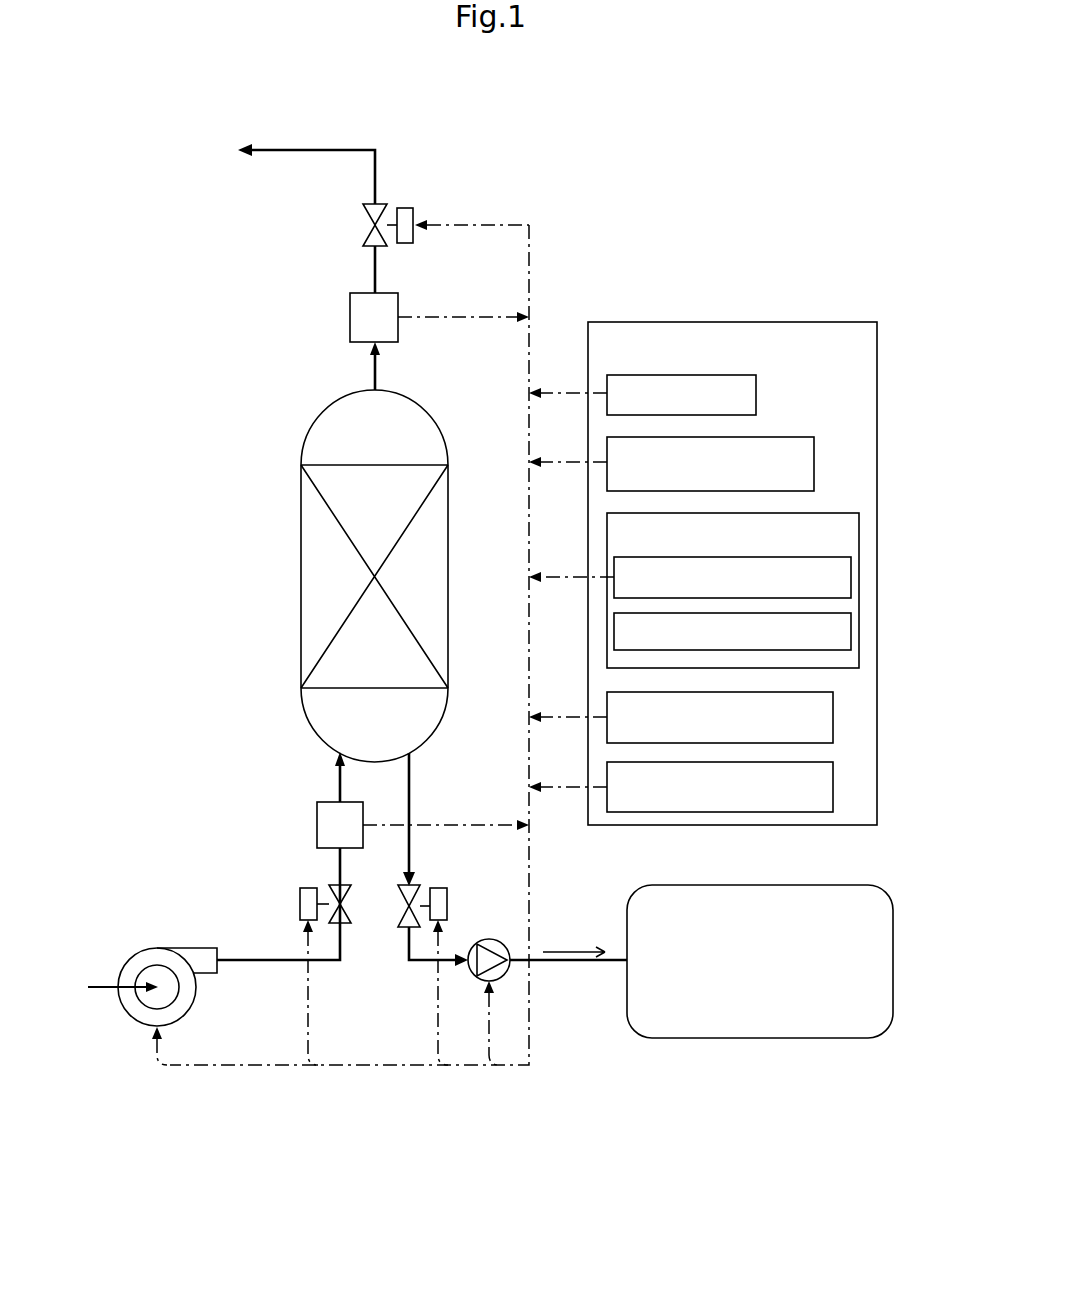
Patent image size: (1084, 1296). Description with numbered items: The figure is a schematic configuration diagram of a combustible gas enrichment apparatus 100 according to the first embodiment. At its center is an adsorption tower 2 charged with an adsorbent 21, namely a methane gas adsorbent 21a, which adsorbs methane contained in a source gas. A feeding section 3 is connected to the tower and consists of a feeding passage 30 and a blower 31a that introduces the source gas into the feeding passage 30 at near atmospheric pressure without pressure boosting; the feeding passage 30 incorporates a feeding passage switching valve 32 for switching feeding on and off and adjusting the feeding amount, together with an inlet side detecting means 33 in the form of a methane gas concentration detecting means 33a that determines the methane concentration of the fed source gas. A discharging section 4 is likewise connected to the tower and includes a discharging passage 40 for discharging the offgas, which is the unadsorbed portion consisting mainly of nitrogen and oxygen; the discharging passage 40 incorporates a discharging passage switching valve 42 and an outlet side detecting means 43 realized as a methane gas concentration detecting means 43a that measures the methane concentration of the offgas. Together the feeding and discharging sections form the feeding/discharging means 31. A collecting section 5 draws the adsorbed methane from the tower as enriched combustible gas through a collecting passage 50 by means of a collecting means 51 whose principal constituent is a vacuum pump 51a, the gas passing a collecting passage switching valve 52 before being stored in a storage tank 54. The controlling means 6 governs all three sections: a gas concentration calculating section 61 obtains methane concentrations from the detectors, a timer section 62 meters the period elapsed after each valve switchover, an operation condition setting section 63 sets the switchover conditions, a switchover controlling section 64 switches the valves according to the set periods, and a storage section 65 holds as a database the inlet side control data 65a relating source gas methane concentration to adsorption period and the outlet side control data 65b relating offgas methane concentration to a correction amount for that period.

The combustible gas enrichment apparatus 100 is at (713, 158).
The adsorption tower 2 is at (313, 421).
The adsorbent 21 is at (300, 576).
The methane gas adsorbent 21a is at (312, 568).
The feeding section 3 is at (225, 886).
The feeding passage 30 is at (268, 962).
The feeding/discharging means 31 is at (142, 946).
The blower 31a is at (157, 948).
The feeding passage switching valve 32 is at (300, 905).
The inlet side detecting means 33 is at (293, 802).
The methane gas concentration detecting means 33a is at (317, 825).
The discharging section 4 is at (410, 186).
The discharging passage 40 is at (312, 150).
The discharging passage switching valve 42 is at (363, 223).
The outlet side detecting means 43 is at (300, 319).
The methane gas concentration detecting means 43a is at (350, 317).
The collecting section 5 is at (588, 1067).
The collecting passage 50 is at (572, 962).
The collecting means 51 is at (484, 906).
The vacuum pump 51a is at (496, 939).
The collecting passage switching valve 52 is at (404, 926).
The storage tank 54 is at (760, 1038).
The controlling means 6 is at (720, 322).
The gas concentration calculating section 61 is at (833, 717).
The timer section 62 is at (756, 393).
The operation condition setting section 63 is at (814, 462).
The switchover controlling section 64 is at (833, 787).
The storage section 65 is at (859, 535).
The inlet side control data 65a is at (851, 577).
The outlet side control data 65b is at (851, 633).